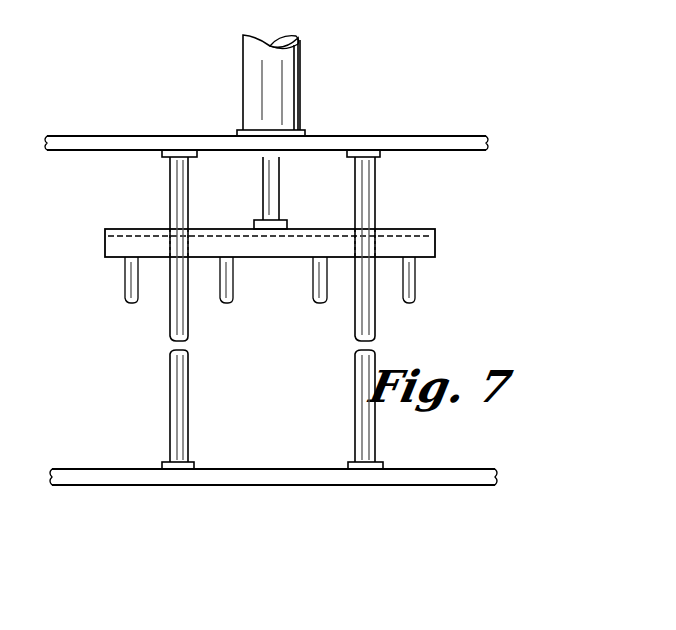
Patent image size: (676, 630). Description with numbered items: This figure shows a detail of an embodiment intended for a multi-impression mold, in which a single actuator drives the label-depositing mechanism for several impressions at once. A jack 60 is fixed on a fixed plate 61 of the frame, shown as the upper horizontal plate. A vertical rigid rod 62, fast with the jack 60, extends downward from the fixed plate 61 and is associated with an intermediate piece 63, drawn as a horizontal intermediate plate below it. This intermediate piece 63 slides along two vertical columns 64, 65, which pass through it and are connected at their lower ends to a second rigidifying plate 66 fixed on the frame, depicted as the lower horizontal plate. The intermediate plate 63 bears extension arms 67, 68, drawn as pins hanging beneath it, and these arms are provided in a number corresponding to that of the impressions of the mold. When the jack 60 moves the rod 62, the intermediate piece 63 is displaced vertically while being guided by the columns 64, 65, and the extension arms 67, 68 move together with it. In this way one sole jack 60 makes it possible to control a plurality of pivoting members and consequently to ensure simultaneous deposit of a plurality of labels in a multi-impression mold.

The jack 60 is at (288, 68).
The fixed plate 61 is at (424, 147).
The vertical rigid rod 62 is at (276, 183).
The intermediate piece 63 is at (428, 241).
The vertical column 64 is at (180, 398).
The vertical column 65 is at (367, 415).
The second rigidifying plate 66 is at (260, 477).
The extension arm 67 is at (128, 283).
The extension arm 68 is at (233, 283).